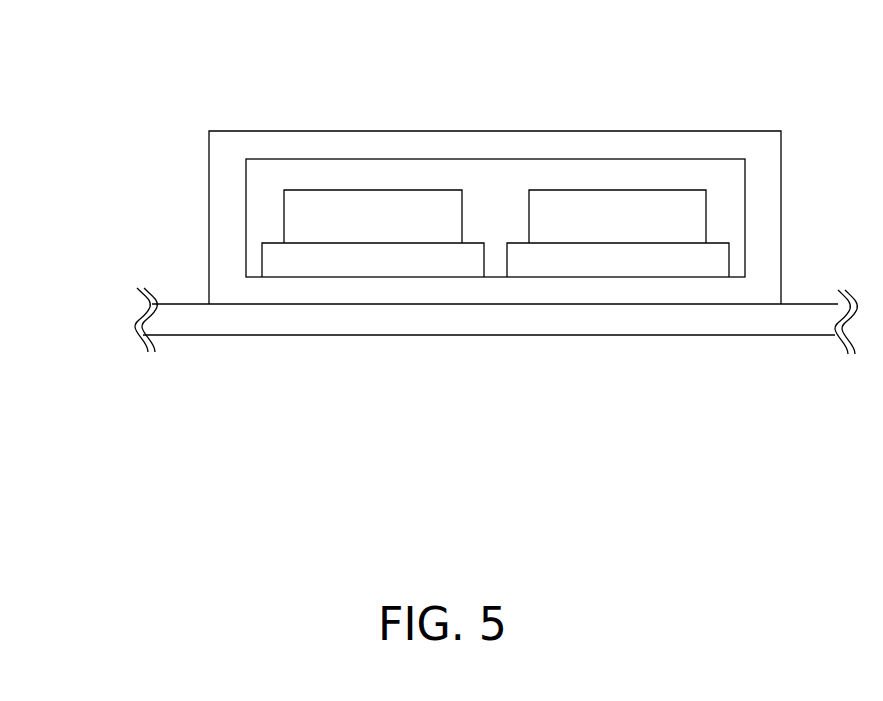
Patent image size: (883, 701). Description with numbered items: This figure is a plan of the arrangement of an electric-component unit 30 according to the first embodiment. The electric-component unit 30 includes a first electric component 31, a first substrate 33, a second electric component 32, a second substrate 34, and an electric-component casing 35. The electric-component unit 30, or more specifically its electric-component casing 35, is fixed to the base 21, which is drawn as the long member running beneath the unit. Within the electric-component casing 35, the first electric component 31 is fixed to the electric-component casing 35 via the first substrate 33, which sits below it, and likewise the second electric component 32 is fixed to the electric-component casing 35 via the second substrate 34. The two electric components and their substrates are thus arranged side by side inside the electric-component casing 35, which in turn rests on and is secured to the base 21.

The base 21 is at (811, 322).
The electric-component unit 30 is at (795, 143).
The first electric component 31 is at (395, 213).
The second electric component 32 is at (614, 205).
The first substrate 33 is at (377, 267).
The second substrate 34 is at (610, 267).
The electric-component casing 35 is at (362, 147).